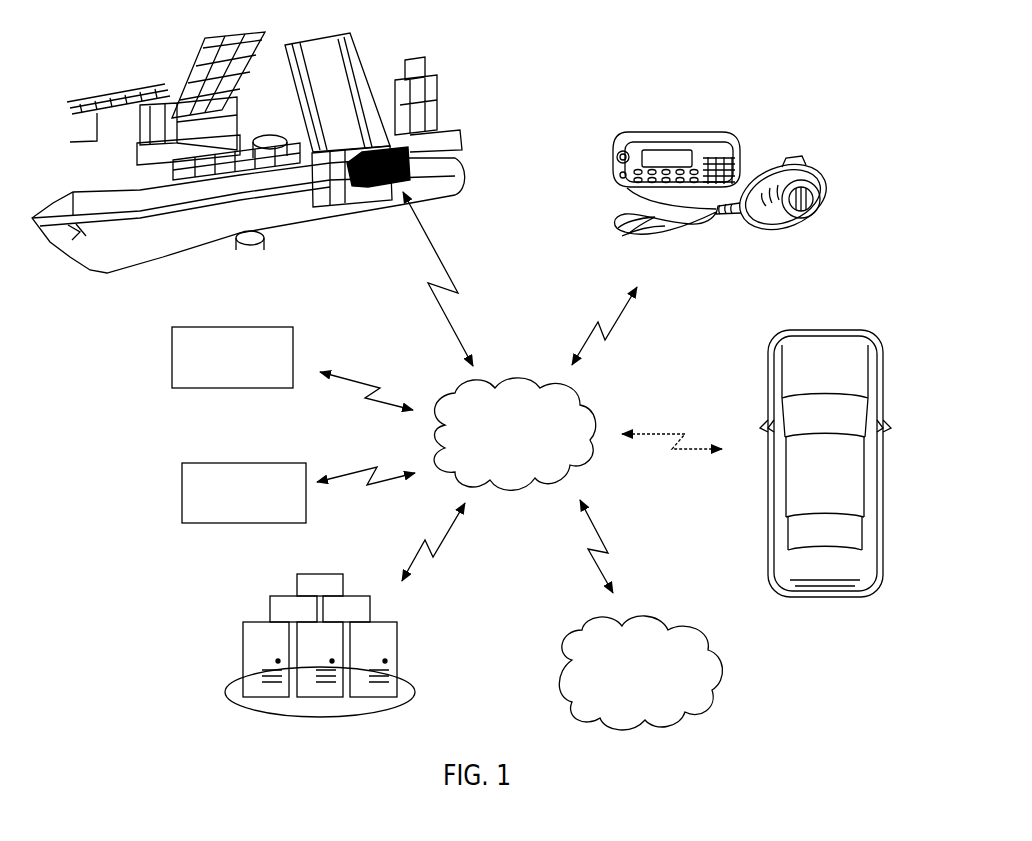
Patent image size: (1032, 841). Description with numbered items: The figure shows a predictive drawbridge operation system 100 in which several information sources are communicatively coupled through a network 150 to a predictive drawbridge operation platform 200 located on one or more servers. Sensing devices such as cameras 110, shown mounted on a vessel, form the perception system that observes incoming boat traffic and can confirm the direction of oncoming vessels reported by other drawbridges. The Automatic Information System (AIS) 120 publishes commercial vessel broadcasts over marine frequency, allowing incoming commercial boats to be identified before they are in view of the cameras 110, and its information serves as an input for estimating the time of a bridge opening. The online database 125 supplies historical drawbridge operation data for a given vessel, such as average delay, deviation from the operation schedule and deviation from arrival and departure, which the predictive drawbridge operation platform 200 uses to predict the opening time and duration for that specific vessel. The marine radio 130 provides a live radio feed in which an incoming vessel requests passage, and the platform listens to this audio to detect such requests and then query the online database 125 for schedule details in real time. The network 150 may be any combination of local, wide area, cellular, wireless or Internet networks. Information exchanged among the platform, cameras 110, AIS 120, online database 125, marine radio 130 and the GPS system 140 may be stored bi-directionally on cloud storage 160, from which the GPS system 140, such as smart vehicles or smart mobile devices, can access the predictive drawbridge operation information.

The predictive drawbridge operation system 100 is at (631, 53).
The cameras 110 is at (392, 143).
The Automatic Information System (AIS) 120 is at (172, 360).
The online database 125 is at (182, 500).
The marine radio 130 is at (720, 137).
The GPS system 140 is at (820, 382).
The network 150 is at (562, 440).
The cloud storage 160 is at (640, 673).
The predictive drawbridge operation platform 200 is at (247, 637).